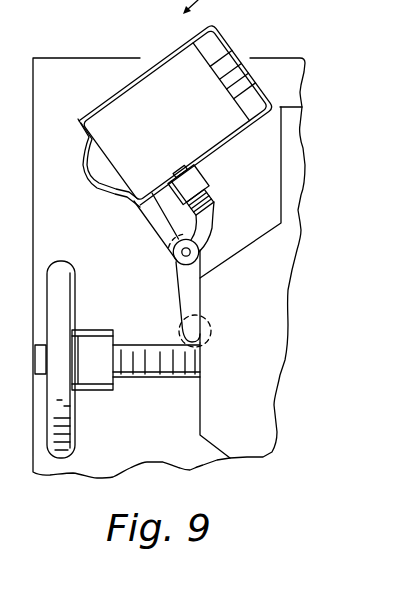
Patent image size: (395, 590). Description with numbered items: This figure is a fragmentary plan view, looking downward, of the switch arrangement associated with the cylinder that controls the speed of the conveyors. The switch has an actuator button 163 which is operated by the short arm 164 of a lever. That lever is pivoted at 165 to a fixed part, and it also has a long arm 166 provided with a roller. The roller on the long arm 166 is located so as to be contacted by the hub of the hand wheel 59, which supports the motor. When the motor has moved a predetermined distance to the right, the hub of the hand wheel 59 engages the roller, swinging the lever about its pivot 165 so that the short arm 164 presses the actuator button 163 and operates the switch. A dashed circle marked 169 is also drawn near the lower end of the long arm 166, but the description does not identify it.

The hand wheel 59 is at (63, 280).
The actuator button 163 is at (214, 207).
The short arm 164 is at (211, 226).
The pivot 165 is at (176, 262).
The long arm 166 is at (181, 299).
The pivot position 169 is at (178, 331).